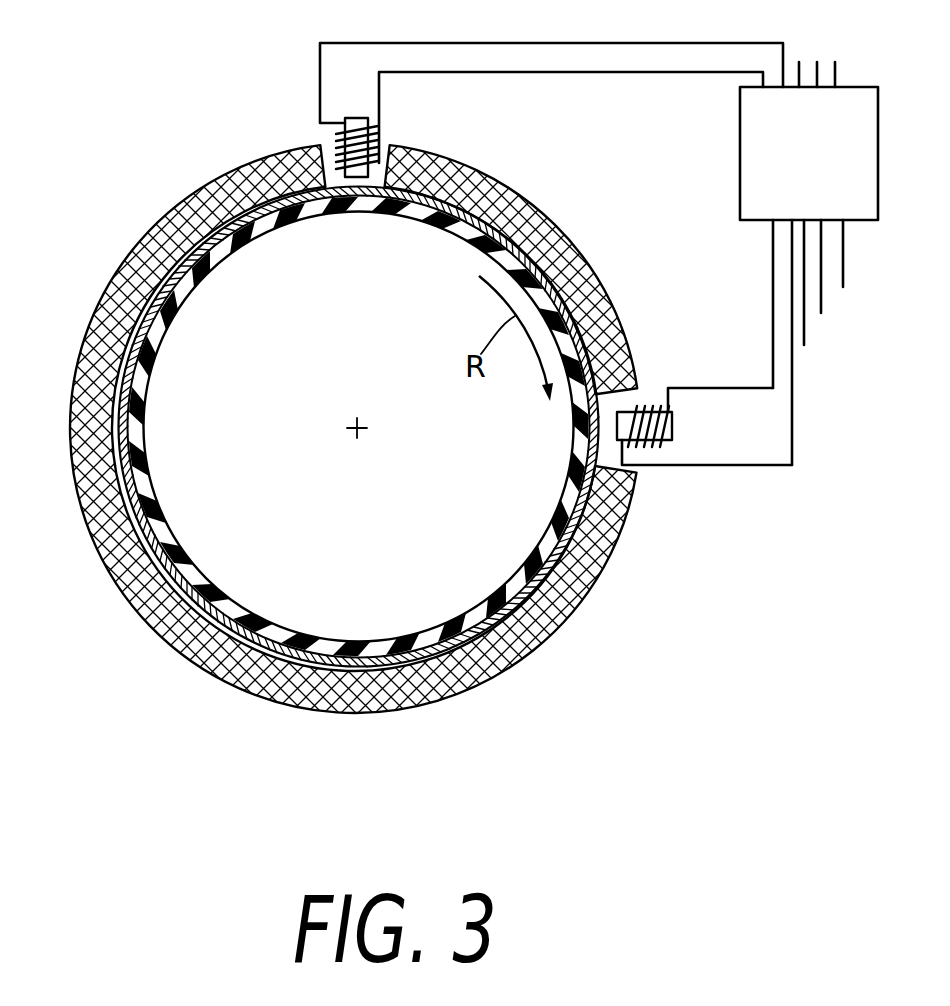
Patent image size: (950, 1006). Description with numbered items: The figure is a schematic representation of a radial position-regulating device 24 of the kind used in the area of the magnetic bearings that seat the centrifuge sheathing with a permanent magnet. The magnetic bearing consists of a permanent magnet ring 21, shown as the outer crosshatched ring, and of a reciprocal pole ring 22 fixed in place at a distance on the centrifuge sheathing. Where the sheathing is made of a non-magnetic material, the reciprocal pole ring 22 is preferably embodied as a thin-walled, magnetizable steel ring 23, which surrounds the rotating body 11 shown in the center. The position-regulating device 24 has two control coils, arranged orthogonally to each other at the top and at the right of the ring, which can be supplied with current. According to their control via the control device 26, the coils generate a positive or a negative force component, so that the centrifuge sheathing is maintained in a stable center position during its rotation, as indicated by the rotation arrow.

The rotatable member 11 is at (176, 558).
The permanent magnet ring 21 is at (618, 302).
The reciprocal pole ring 22 is at (436, 637).
The thin-walled magnetizable steel ring 23 is at (137, 324).
The radial position-regulating device 24 is at (704, 464).
The control device 26 is at (823, 173).